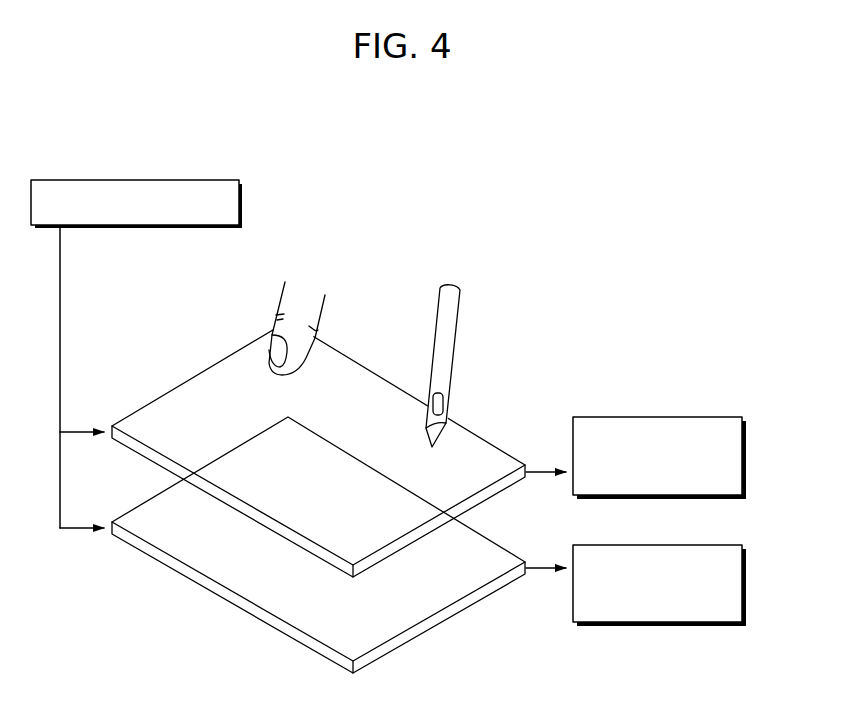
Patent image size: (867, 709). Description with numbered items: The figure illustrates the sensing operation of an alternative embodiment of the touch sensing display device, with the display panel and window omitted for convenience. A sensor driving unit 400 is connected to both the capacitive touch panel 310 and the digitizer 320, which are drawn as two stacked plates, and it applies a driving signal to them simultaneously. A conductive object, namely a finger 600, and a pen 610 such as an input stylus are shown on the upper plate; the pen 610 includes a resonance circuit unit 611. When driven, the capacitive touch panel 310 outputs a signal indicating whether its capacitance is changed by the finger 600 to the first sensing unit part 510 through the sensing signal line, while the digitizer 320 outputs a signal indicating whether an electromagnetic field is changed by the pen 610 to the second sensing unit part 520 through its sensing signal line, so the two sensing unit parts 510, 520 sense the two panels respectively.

The sensor driving unit 400 is at (100, 180).
The capacitive touch panel 310 is at (193, 390).
The digitizer 320 is at (285, 612).
The finger 600 is at (283, 301).
The pen 610 is at (446, 312).
The resonance circuit unit 611 is at (443, 397).
The first sensing unit part 510 is at (672, 417).
The second sensing unit part 520 is at (672, 622).